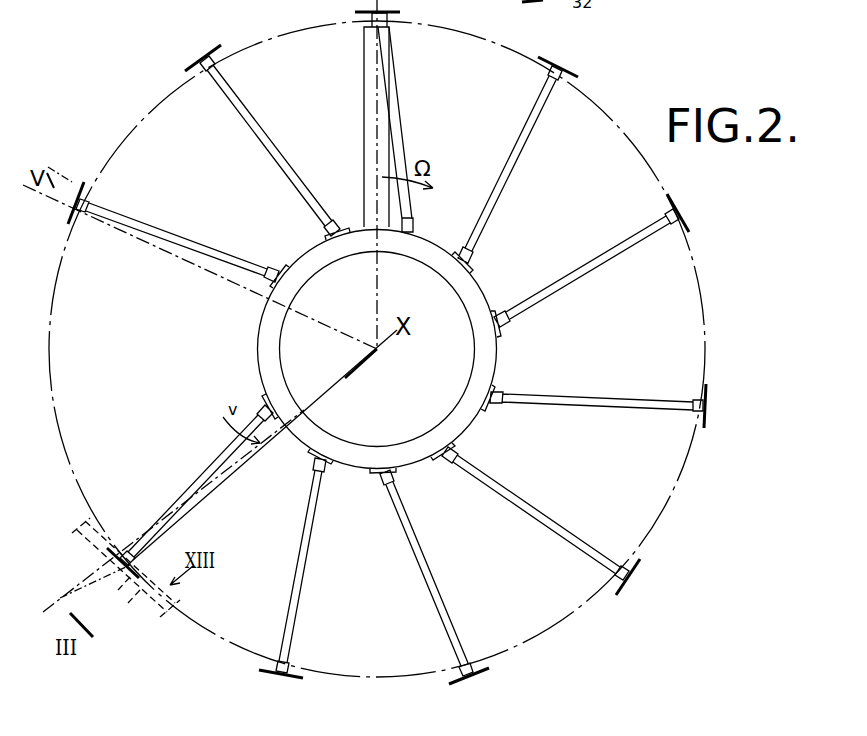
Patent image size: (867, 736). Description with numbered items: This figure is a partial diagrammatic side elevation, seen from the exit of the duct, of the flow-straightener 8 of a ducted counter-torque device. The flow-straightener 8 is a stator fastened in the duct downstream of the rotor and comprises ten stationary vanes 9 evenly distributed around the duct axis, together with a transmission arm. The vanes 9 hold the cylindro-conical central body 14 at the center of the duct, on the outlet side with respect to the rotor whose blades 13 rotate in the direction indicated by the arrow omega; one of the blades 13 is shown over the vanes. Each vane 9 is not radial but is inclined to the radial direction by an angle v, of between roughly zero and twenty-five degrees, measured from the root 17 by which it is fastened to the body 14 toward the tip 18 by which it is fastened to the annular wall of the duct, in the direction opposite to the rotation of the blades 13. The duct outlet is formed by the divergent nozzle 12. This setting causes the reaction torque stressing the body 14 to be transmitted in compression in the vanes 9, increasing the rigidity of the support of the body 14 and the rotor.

The flow-straightening stator 8 is at (563, 632).
The stationary vanes 9 is at (387, 364).
The divergent nozzle 12 is at (126, 583).
The blades 13 is at (371, 94).
The central body 14 is at (477, 303).
The root 17 is at (318, 470).
The tip 18 is at (287, 667).